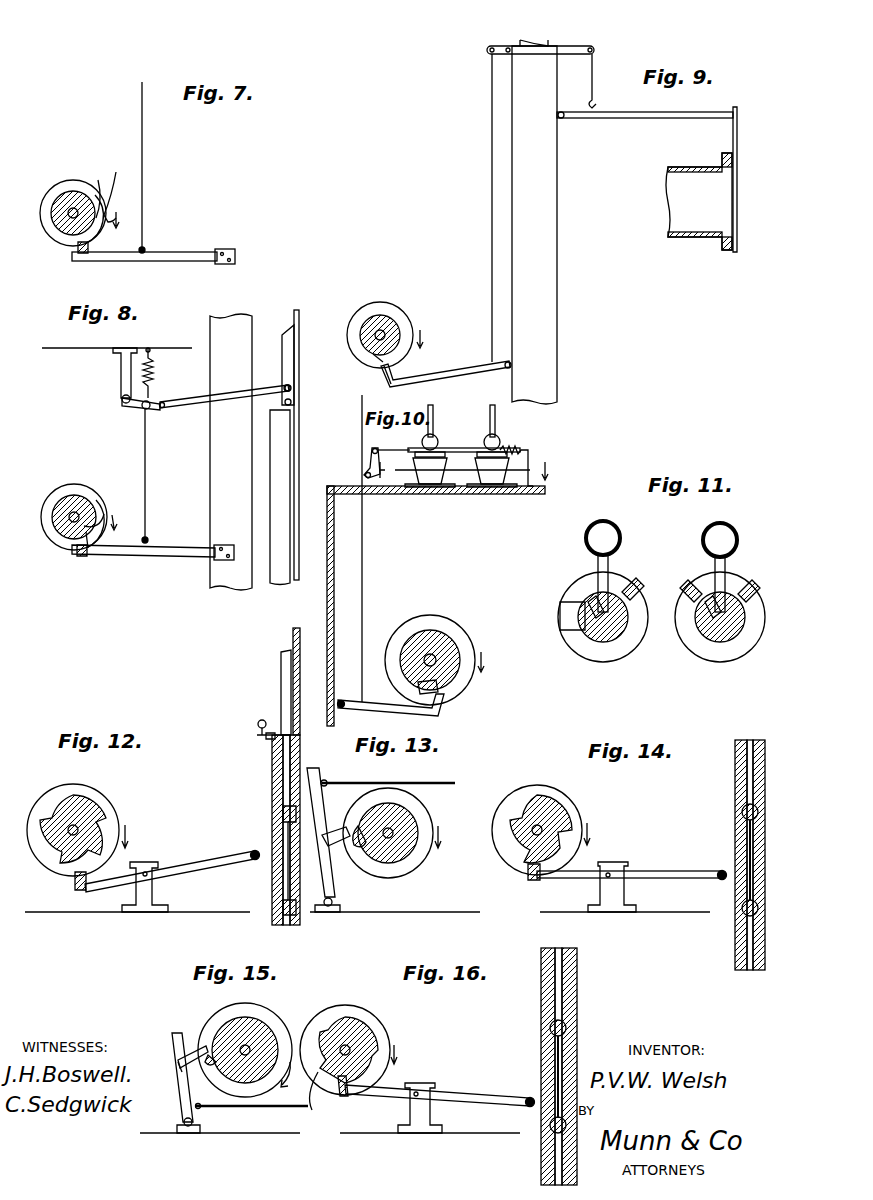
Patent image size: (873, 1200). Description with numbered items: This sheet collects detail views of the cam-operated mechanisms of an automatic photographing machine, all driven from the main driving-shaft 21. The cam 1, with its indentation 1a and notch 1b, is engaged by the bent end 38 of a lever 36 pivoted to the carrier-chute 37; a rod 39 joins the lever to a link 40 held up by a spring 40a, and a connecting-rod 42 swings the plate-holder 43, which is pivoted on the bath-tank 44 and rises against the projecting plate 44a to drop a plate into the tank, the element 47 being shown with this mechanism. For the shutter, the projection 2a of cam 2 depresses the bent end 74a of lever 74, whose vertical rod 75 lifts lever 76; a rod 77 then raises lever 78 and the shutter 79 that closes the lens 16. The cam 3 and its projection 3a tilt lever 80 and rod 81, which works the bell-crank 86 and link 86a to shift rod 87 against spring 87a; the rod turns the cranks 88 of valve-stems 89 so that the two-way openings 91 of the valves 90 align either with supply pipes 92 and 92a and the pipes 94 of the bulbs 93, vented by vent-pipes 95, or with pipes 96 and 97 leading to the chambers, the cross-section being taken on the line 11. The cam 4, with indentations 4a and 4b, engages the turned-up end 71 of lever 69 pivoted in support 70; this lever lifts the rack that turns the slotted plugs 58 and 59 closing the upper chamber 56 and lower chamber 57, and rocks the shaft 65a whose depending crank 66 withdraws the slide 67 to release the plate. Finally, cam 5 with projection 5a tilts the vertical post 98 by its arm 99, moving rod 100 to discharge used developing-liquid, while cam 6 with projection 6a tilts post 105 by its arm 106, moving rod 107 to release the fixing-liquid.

In FIG. 7, the cam 1 is at (70, 195).
In FIG. 8, the cam 1 is at (76, 498).
In FIG. 7, the indentation 1a is at (116, 175).
In FIG. 8, the indentation 1a is at (88, 550).
In FIG. 7, the notch 1b is at (99, 180).
In FIG. 8, the notch 1b is at (107, 518).
In FIG. 9, the cam 2 is at (378, 318).
In FIG. 9, the cam projection 2a is at (372, 358).
In FIG. 10, the cam 3 is at (432, 630).
In FIG. 10, the cam projection 3a is at (438, 686).
In FIG. 12, the cam 4 is at (108, 820).
In FIG. 14, the cam 4 is at (562, 818).
In FIG. 16, the cam 4 is at (378, 1034).
In FIG. 12, the indentation 4a is at (84, 800).
In FIG. 14, the indentation 4a is at (566, 854).
In FIG. 16, the indentation 4a is at (316, 1097).
In FIG. 12, the deeper indentation 4b is at (46, 824).
In FIG. 14, the deeper indentation 4b is at (570, 826).
In FIG. 16, the deeper indentation 4b is at (343, 1098).
In FIG. 13, the cam 5 is at (418, 815).
In FIG. 13, the cam projection 5a is at (360, 848).
In FIG. 15, the cam 6 is at (226, 1022).
In FIG. 15, the cam projection 6a is at (210, 1050).
In FIG. 10, the section line 11 is at (470, 471).
In FIG. 9, the lens 16 is at (699, 201).
In FIG. 7, the main driving-shaft 21 is at (52, 223).
In FIG. 8, the main driving-shaft 21 is at (54, 524).
In FIG. 9, the main driving-shaft 21 is at (385, 332).
In FIG. 10, the main driving-shaft 21 is at (436, 656).
In FIG. 12, the main driving-shaft 21 is at (52, 842).
In FIG. 13, the main driving-shaft 21 is at (392, 850).
In FIG. 14, the main driving-shaft 21 is at (530, 840).
In FIG. 15, the main driving-shaft 21 is at (250, 1042).
In FIG. 16, the main driving-shaft 21 is at (346, 1042).
In FIG. 7, the lever 36 is at (168, 252).
In FIG. 8, the lever 36 is at (160, 545).
In FIG. 8, the carrier-chute 37 is at (226, 508).
In FIG. 9, the carrier-chute 37 is at (534, 225).
In FIG. 7, the bent end 38 is at (80, 252).
In FIG. 8, the bent end 38 is at (78, 553).
In FIG. 7, the rod 39 is at (143, 200).
In FIG. 8, the rod 39 is at (146, 455).
In FIG. 8, the link 40 is at (136, 410).
In FIG. 8, the spring 40a is at (150, 372).
In FIG. 8, the connecting-rod 42 is at (190, 400).
In FIG. 8, the plate-holder 43 is at (284, 362).
In FIG. 12, the plate-holder 43 is at (282, 671).
In FIG. 8, the bath-tank 44 is at (287, 440).
In FIG. 12, the bath-tank 44 is at (272, 769).
In FIG. 14, the bath-tank 44 is at (735, 830).
In FIG. 16, the bath-tank 44 is at (577, 990).
In FIG. 8, the projecting plate 44a is at (299, 320).
In FIG. 12, the projecting plate 44a is at (298, 630).
In FIG. 8, the hanger 47 is at (120, 373).
In FIG. 12, the upper chamber 56 is at (292, 758).
In FIG. 13, the upper chamber 56 is at (292, 768).
In FIG. 14, the upper chamber 56 is at (748, 773).
In FIG. 16, the upper chamber 56 is at (560, 955).
In FIG. 12, the lower chamber 57 is at (285, 835).
In FIG. 14, the lower chamber 57 is at (748, 882).
In FIG. 16, the lower chamber 57 is at (562, 1065).
In FIG. 12, the upper plug or valve 58 is at (282, 810).
In FIG. 14, the upper plug or valve 58 is at (742, 808).
In FIG. 16, the upper plug or valve 58 is at (550, 1028).
In FIG. 12, the lower plug or valve 59 is at (283, 912).
In FIG. 14, the lower plug or valve 59 is at (744, 912).
In FIG. 16, the lower plug or valve 59 is at (550, 1130).
In FIG. 12, the rock-shaft 65a is at (262, 720).
In FIG. 12, the depending crank 66 is at (260, 746).
In FIG. 12, the slide 67 is at (258, 736).
In FIG. 12, the lever 69 is at (186, 866).
In FIG. 14, the lever 69 is at (666, 871).
In FIG. 16, the lever 69 is at (444, 1096).
In FIG. 12, the support 70 is at (155, 888).
In FIG. 14, the support 70 is at (622, 893).
In FIG. 16, the support 70 is at (426, 1113).
In FIG. 12, the turned-up end 71 is at (80, 888).
In FIG. 14, the turned-up end 71 is at (536, 880).
In FIG. 16, the turned-up end 71 is at (408, 1058).
In FIG. 9, the lever 74 is at (443, 372).
In FIG. 9, the bent end 74a is at (386, 378).
In FIG. 9, the vertical rod 75 is at (491, 234).
In FIG. 9, the lever 76 is at (532, 46).
In FIG. 9, the rod 77 is at (593, 80).
In FIG. 9, the lever 78 is at (618, 112).
In FIG. 9, the shutter 79 is at (738, 140).
In FIG. 10, the lever 80 is at (386, 706).
In FIG. 10, the rod 81 is at (364, 558).
In FIG. 10, the bell-crank 86 is at (372, 462).
In FIG. 10, the link 86a is at (394, 437).
In FIG. 10, the rod 87 is at (440, 448).
In FIG. 10, the spring 87a is at (520, 448).
In FIG. 10, the crank 88 is at (436, 438).
In FIG. 10, the valve-stem 89 is at (426, 470).
In FIG. 11, the valve-stem 89 is at (603, 640).
In FIG. 10, the valve 90 is at (434, 470).
In FIG. 11, the valve 90 is at (615, 640).
In FIG. 11, the two-way opening 91 is at (590, 625).
In FIG. 11, the pipe 92 is at (632, 578).
In FIG. 11, the pipe 92a is at (750, 582).
In FIG. 10, the bulb 93 is at (420, 452).
In FIG. 11, the bulb 93 is at (604, 521).
In FIG. 11, the bulb pipe 94 is at (598, 562).
In FIG. 10, the vent-pipe 95 is at (463, 413).
In FIG. 11, the pipe 96 is at (562, 620).
In FIG. 11, the pipe 97 is at (690, 586).
In FIG. 13, the vertical post 98 is at (320, 772).
In FIG. 13, the projecting arm 99 is at (336, 828).
In FIG. 13, the rod 100 is at (388, 773).
In FIG. 15, the vertical post 105 is at (174, 1033).
In FIG. 15, the projecting arm 106 is at (190, 1068).
In FIG. 15, the rod 107 is at (251, 1116).